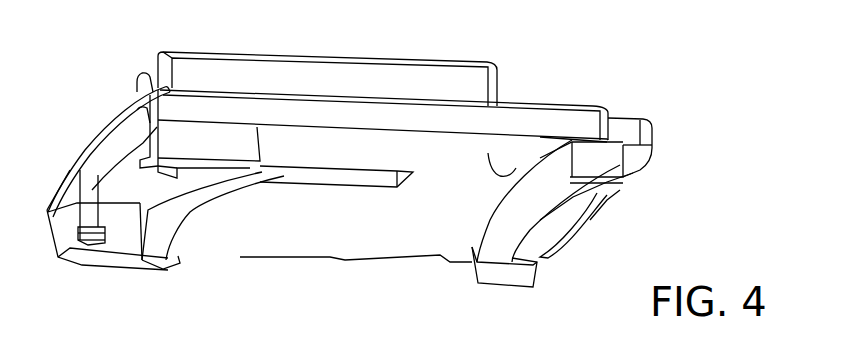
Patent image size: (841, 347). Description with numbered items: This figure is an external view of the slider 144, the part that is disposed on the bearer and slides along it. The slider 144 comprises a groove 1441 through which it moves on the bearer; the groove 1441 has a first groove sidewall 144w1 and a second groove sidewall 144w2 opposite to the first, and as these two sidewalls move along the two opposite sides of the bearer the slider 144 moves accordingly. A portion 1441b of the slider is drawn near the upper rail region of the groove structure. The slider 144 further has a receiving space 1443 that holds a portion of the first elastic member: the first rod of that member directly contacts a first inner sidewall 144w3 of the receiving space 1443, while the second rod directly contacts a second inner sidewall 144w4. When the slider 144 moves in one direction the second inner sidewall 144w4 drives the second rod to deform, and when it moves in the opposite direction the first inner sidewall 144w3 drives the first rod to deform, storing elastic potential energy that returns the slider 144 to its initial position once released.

The slider 144 is at (339, 48).
The groove 1441 is at (310, 223).
The front rail of base 1441b is at (512, 180).
The receiving space 1443 is at (112, 175).
The first groove sidewall 144w1 is at (185, 232).
The second groove sidewall 144w2 is at (478, 248).
The first inner sidewall 144w3 is at (115, 225).
The second inner sidewall 144w4 is at (130, 147).